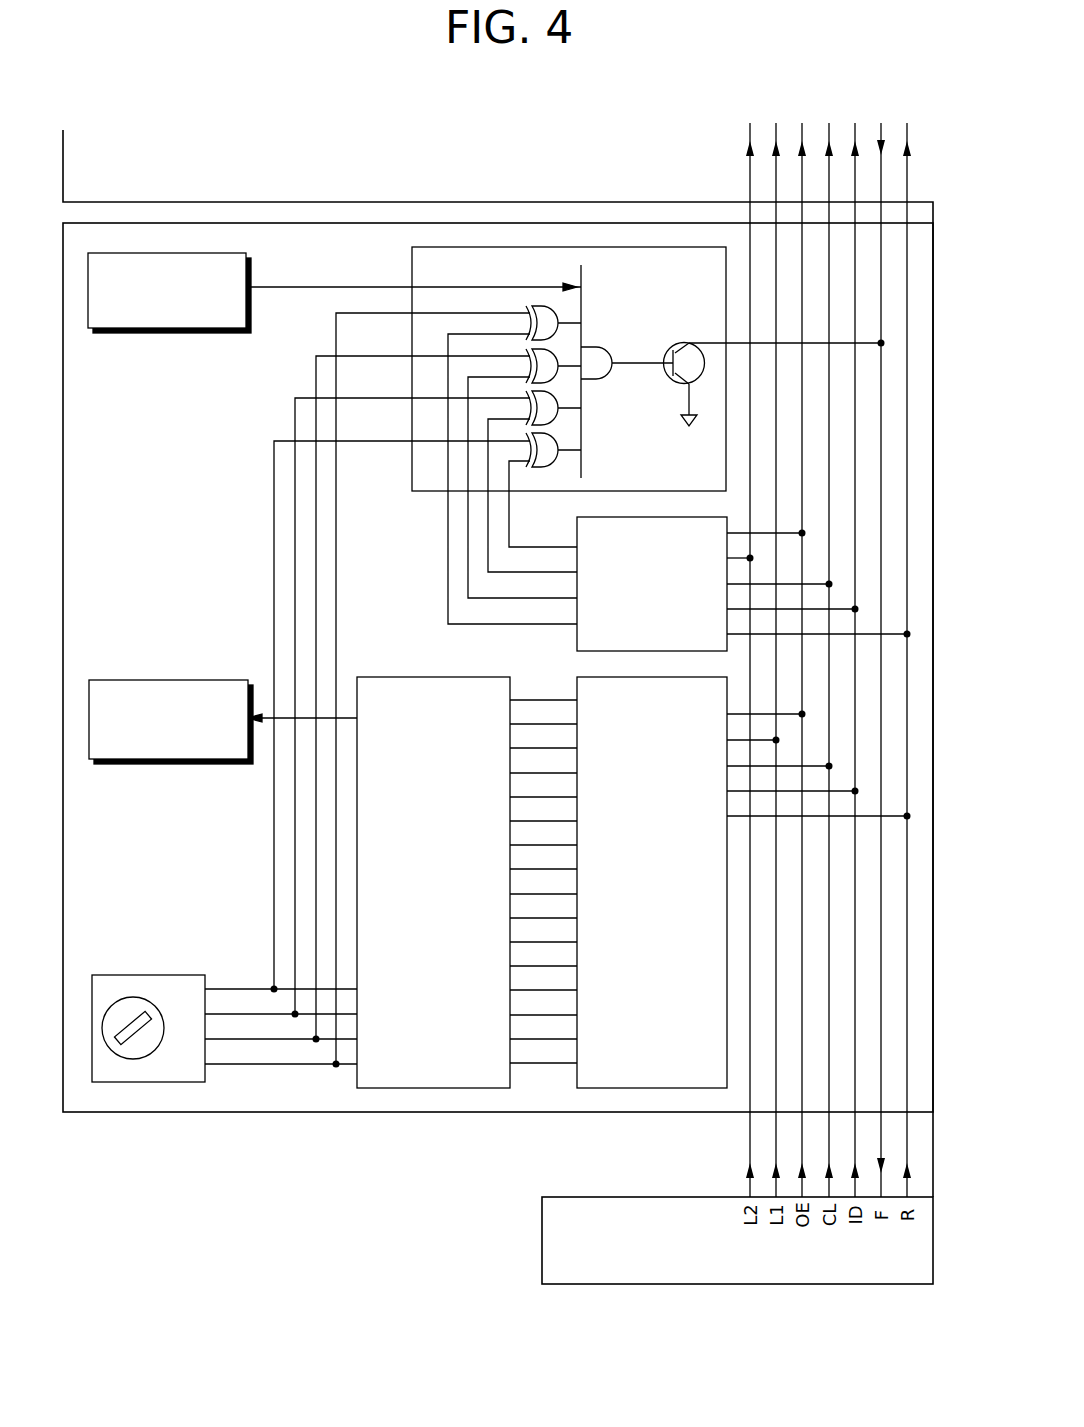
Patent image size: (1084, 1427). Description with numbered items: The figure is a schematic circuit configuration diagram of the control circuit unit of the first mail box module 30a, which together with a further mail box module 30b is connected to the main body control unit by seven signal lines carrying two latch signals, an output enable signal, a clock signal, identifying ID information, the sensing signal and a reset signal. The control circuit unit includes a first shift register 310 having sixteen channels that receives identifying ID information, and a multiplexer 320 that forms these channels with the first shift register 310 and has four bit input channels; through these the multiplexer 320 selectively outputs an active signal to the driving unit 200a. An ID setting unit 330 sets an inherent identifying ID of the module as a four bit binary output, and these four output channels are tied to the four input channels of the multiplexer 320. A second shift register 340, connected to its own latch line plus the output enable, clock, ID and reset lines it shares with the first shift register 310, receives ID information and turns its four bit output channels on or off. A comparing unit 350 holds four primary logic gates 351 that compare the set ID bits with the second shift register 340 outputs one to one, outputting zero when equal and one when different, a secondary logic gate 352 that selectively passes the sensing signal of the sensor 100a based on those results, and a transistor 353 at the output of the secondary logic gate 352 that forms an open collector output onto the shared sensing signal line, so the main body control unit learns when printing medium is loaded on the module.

The mail box module 30b is at (157, 140).
The first mail box module 30a is at (266, 1132).
The sensor 100a is at (165, 333).
The driving unit 200a is at (166, 678).
The first shift register 310 is at (665, 1088).
The multiplexer 320 is at (432, 1090).
The ID setting unit 330 is at (150, 1083).
The second shift register 340 is at (577, 645).
The comparing unit 350 is at (412, 265).
The primary logic gates 351 is at (526, 454).
The secondary logic gate 352 is at (596, 345).
The transistor 353 is at (673, 342).